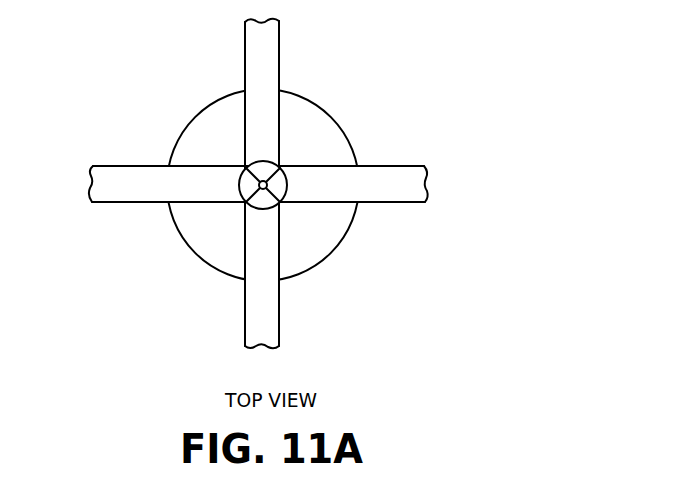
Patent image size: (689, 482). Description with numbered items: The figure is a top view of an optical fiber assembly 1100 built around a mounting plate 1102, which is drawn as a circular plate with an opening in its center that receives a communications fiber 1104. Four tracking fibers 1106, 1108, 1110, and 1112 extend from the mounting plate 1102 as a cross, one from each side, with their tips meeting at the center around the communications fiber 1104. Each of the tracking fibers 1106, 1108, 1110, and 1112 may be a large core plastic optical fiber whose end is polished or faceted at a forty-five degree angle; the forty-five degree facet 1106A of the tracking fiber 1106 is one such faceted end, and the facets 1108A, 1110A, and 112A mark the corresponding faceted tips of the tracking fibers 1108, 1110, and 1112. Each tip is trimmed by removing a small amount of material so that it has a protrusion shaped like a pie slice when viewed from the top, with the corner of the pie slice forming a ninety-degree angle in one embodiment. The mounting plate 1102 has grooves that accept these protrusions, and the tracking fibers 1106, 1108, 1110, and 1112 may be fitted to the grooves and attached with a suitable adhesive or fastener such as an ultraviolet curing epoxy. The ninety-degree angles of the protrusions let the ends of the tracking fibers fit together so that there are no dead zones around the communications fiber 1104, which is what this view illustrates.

The optical fiber assembly 1100 is at (492, 105).
The mounting plate 1102 is at (342, 123).
The communications fiber 1104 is at (268, 182).
The tracking fiber 1106 is at (110, 163).
The forty-five degree facet 1106A is at (231, 168).
The tracking fiber 1108 is at (280, 44).
The top arm inner section 1108A is at (264, 167).
The tracking fiber 1110 is at (392, 203).
The right arm inner section 1110A is at (288, 187).
The tracking fiber 1112 is at (241, 267).
The bottom arm inner section 112A is at (258, 202).